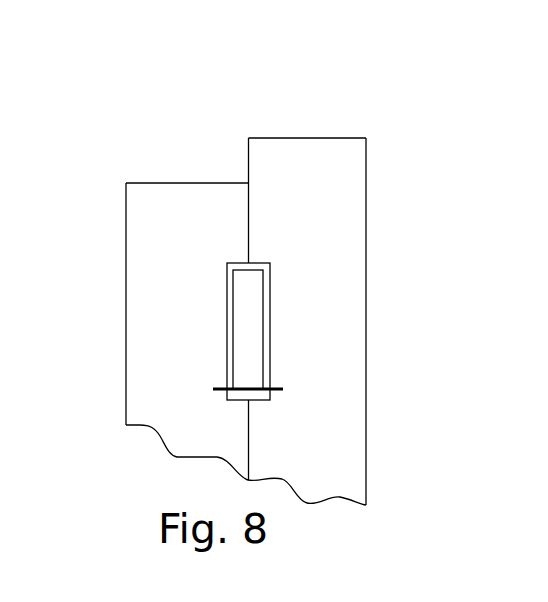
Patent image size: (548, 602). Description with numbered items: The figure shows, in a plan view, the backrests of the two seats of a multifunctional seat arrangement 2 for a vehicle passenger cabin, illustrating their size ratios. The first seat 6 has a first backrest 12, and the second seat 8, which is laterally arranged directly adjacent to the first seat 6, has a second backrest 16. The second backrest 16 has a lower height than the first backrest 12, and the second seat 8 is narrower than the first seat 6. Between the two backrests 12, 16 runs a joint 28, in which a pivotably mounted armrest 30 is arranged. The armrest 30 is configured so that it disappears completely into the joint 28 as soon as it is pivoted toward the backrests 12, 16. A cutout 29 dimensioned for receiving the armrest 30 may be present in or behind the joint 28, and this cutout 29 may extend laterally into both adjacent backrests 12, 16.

The multifunctional seat arrangement 2 is at (219, 106).
The first seat 6 is at (304, 126).
The second seat 8 is at (182, 166).
The first backrest 12 is at (358, 349).
The second backrest 16 is at (137, 362).
The joint 28 is at (257, 232).
The cutout 29 is at (272, 278).
The armrest 30 is at (255, 342).